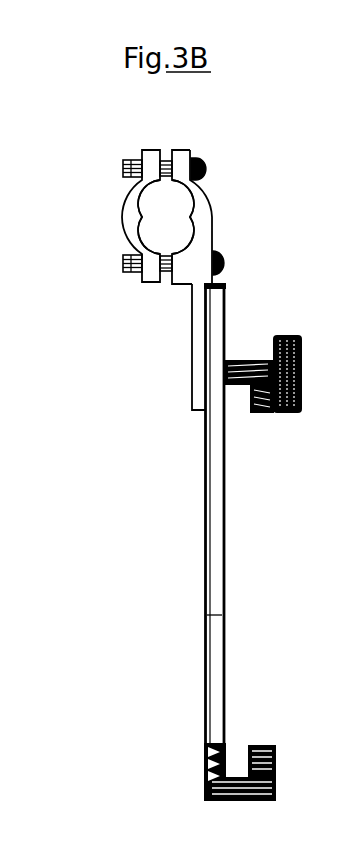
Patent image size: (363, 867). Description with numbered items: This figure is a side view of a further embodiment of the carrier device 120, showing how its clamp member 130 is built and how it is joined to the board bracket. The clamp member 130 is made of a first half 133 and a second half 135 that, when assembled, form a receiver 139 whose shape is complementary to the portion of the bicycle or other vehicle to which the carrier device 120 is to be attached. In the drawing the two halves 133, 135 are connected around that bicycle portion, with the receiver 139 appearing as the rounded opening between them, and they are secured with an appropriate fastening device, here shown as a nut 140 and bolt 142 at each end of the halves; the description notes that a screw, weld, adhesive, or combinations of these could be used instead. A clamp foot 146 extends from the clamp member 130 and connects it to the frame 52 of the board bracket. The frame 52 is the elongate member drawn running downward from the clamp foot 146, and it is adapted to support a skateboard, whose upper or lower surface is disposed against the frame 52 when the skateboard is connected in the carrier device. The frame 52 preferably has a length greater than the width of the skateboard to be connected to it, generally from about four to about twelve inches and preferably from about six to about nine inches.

The frame 52 is at (222, 575).
The carrier device 120 is at (174, 412).
The clamp member 130 is at (268, 188).
The first half 133 is at (121, 213).
The second half 135 is at (212, 225).
The receiver 139 is at (133, 239).
The nut 140 is at (247, 131).
The bolt 142 is at (124, 162).
The clamp foot 146 is at (193, 391).